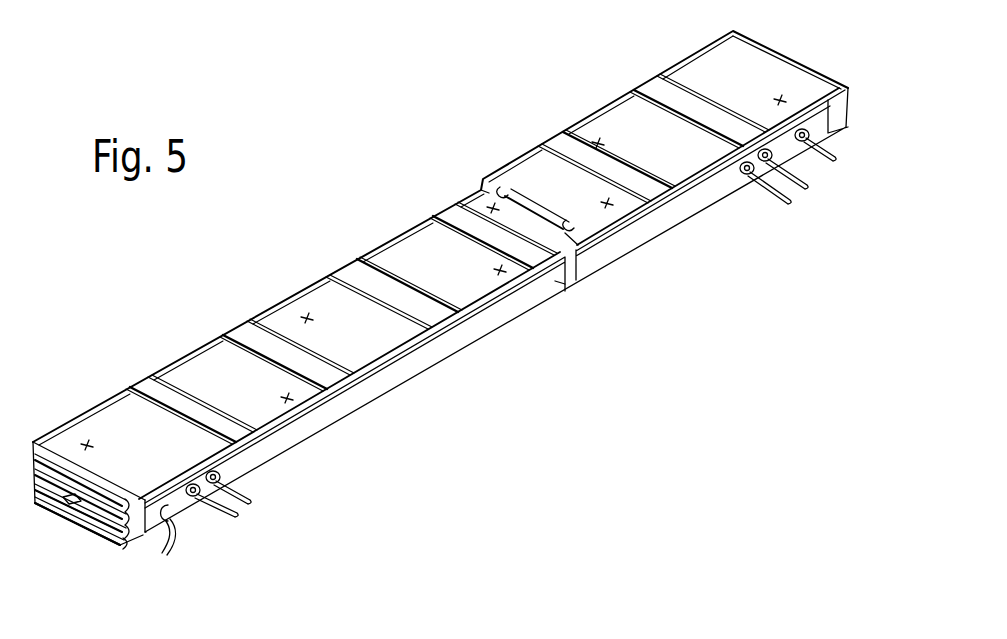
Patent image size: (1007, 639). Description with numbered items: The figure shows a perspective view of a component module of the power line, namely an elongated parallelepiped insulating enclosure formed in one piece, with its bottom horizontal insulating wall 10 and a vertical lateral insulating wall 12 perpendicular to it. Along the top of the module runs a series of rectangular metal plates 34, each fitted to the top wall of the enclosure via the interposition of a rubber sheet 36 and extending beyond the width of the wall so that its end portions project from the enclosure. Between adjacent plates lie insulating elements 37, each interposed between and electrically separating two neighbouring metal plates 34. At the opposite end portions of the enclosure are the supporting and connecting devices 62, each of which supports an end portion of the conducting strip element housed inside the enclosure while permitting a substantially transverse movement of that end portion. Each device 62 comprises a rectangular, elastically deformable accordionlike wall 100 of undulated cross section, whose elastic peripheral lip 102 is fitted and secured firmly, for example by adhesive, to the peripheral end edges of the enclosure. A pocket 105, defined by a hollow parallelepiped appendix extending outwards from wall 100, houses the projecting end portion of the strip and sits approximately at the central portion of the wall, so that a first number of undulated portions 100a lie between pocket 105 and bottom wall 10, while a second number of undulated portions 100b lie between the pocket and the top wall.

The bottom horizontal insulating wall 10 is at (143, 547).
The vertical lateral insulating wall 12 is at (556, 284).
The rectangular metal plate 34 is at (695, 66).
The insulating element 37 is at (643, 92).
The supporting and connecting device 62 is at (846, 88).
The accordionlike wall 100 is at (112, 545).
The first undulated portions 100a is at (103, 542).
The second undulated portions 100b is at (35, 465).
The pocket 105 is at (62, 508).
The elastic peripheral lip 102 is at (577, 628).
The rubber sheet 36 is at (646, 628).